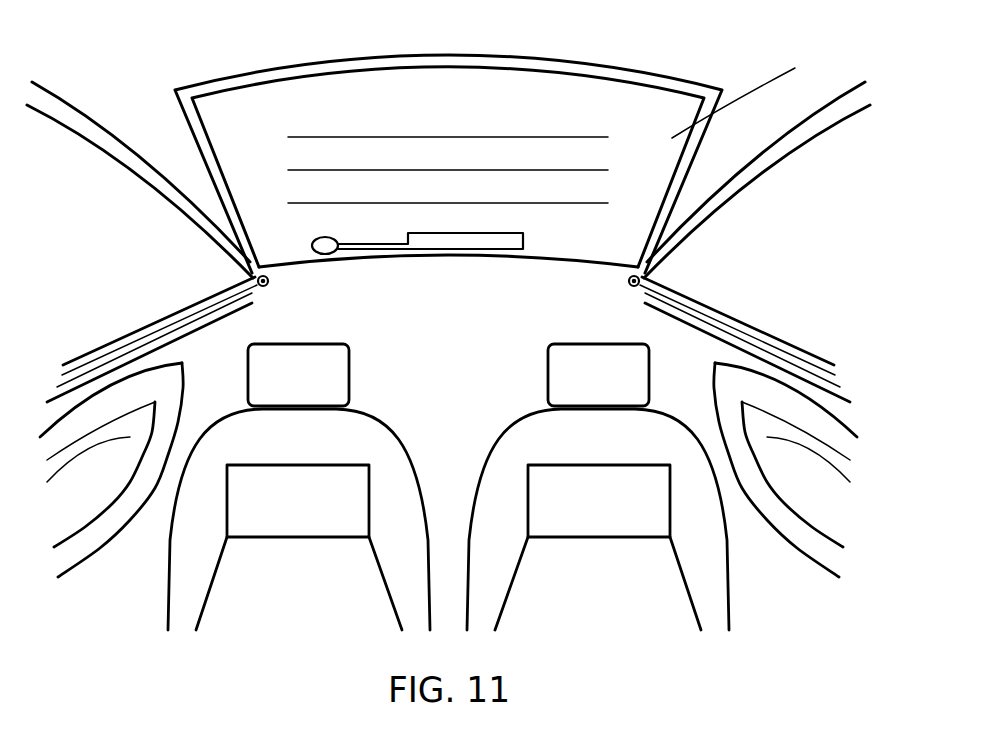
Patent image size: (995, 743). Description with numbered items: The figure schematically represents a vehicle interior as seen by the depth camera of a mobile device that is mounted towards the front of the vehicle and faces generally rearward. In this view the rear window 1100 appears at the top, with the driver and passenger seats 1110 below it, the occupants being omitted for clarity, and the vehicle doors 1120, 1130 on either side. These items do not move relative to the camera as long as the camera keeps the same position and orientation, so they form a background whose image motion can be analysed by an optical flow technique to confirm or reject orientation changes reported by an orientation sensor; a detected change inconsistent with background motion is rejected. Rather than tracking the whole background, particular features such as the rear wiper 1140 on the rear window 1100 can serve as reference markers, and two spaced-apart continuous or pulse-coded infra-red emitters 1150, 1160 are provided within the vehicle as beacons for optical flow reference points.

The rear window 1100 is at (647, 120).
The driver and passenger seats 1110 is at (388, 430).
The vehicle door 1120 is at (67, 557).
The vehicle door 1130 is at (830, 557).
The rear wiper 1140 is at (525, 242).
The infra-red emitter 1150 is at (257, 280).
The infra-red emitter 1160 is at (640, 279).